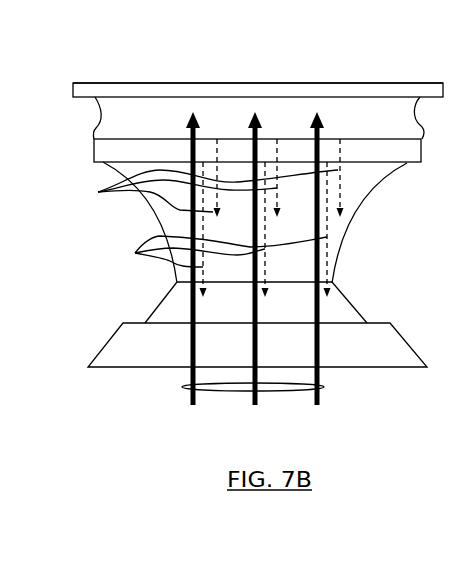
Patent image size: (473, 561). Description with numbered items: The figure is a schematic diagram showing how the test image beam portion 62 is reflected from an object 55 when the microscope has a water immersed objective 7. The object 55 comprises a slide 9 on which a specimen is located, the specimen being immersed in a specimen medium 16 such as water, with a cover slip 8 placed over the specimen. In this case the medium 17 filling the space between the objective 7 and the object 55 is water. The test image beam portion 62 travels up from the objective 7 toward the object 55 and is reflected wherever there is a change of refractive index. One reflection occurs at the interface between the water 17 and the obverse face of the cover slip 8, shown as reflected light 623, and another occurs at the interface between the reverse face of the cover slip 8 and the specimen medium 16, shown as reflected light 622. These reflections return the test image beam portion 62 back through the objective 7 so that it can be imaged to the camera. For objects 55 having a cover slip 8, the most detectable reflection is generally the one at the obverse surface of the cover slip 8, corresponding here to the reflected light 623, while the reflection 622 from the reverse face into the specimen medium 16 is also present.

The slide 9 is at (77, 93).
The object 55 is at (378, 79).
The specimen medium 16 is at (105, 129).
The cover slip 8 is at (95, 157).
The water medium 17 is at (360, 186).
The reflected light 622 is at (200, 191).
The reflected light 623 is at (212, 252).
The objective 7 is at (102, 347).
The test image beam portion 62 is at (325, 387).